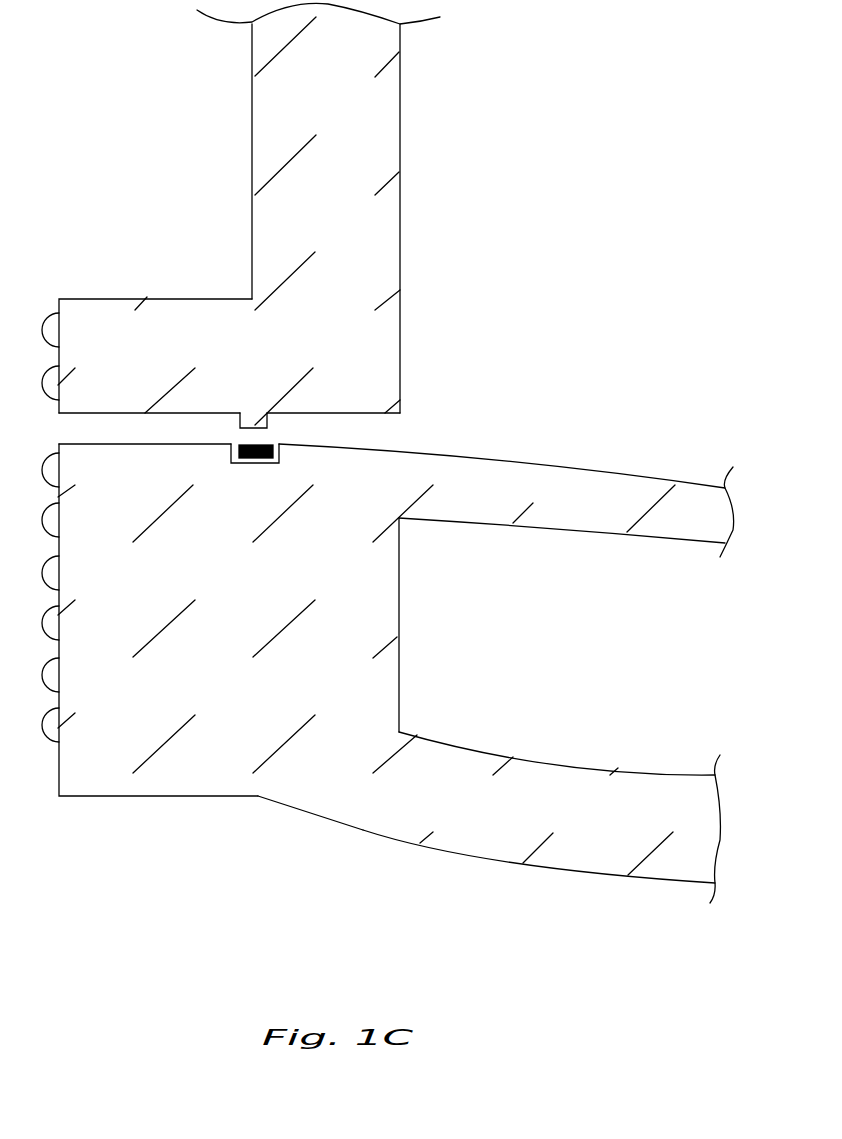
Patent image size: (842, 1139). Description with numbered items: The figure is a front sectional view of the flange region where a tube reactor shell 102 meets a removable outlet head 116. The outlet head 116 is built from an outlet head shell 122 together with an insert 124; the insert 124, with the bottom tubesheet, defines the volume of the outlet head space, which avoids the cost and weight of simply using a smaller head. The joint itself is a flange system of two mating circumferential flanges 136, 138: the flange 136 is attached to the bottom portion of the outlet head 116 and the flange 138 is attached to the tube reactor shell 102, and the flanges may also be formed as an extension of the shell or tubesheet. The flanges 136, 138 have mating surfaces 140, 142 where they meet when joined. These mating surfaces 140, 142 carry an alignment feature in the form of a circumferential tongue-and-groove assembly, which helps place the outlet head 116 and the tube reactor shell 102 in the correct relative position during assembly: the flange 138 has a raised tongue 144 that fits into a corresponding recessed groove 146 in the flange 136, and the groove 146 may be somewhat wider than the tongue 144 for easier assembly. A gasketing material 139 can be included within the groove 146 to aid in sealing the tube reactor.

The tube reactor shell 102 is at (318, 208).
The circumferential flange 138 is at (177, 361).
The mating surface 142 is at (145, 413).
The raised tongue 144 is at (252, 413).
The gasketing material 139 is at (265, 442).
The mating surface 140 is at (150, 444).
The recessed groove 146 is at (258, 463).
The insert 124 is at (506, 500).
The circumferential flange 136 is at (237, 620).
The outlet head 116 is at (541, 817).
The outlet head shell 122 is at (362, 830).